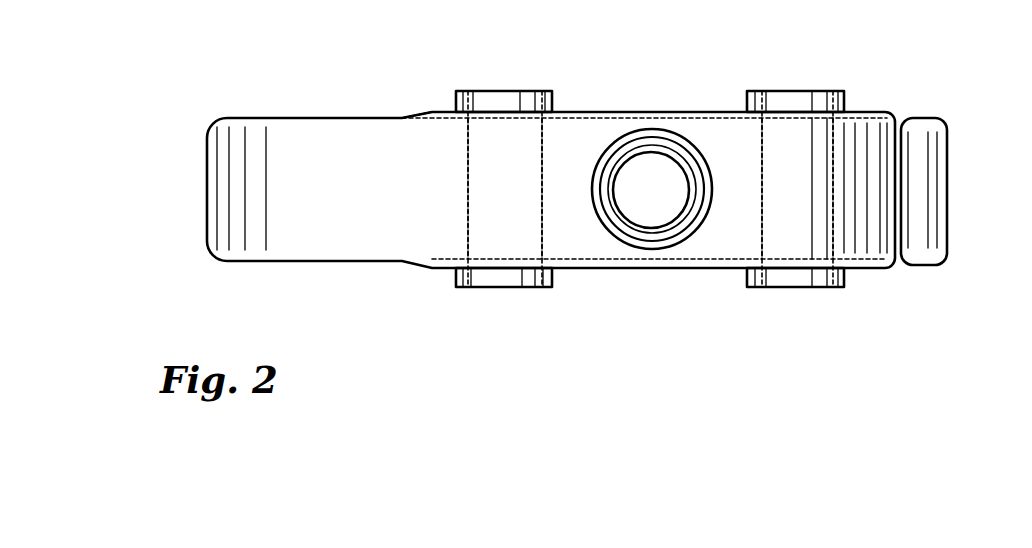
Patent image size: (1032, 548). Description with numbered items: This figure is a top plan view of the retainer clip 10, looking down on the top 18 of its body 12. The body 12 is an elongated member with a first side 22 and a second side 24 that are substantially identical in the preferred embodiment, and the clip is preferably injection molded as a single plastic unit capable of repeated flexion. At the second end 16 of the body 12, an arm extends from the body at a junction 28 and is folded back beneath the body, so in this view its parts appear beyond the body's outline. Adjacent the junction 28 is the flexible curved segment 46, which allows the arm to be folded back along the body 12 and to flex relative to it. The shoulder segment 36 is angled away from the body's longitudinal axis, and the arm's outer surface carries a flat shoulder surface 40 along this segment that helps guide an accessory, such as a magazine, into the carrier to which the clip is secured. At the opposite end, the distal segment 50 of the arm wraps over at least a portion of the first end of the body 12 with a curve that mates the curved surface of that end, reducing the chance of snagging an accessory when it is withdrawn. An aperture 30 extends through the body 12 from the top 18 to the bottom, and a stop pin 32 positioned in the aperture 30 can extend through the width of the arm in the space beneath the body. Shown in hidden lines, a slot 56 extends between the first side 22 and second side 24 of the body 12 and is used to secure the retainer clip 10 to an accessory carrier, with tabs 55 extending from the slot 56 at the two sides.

The retainer clip 10 is at (196, 110).
The body 12 is at (684, 101).
The second end 16 is at (433, 111).
The top 18 is at (735, 208).
The first side 22 is at (580, 111).
The second side 24 is at (588, 269).
The junction 28 is at (393, 117).
The aperture 30 is at (620, 188).
The stop pin 32 is at (652, 210).
The shoulder segment 36 is at (303, 117).
The shoulder surface 40 is at (349, 203).
The curved segment 46 is at (207, 178).
The distal segment 50 is at (948, 158).
The tabs 55 is at (560, 91).
The slot 56 is at (763, 163).